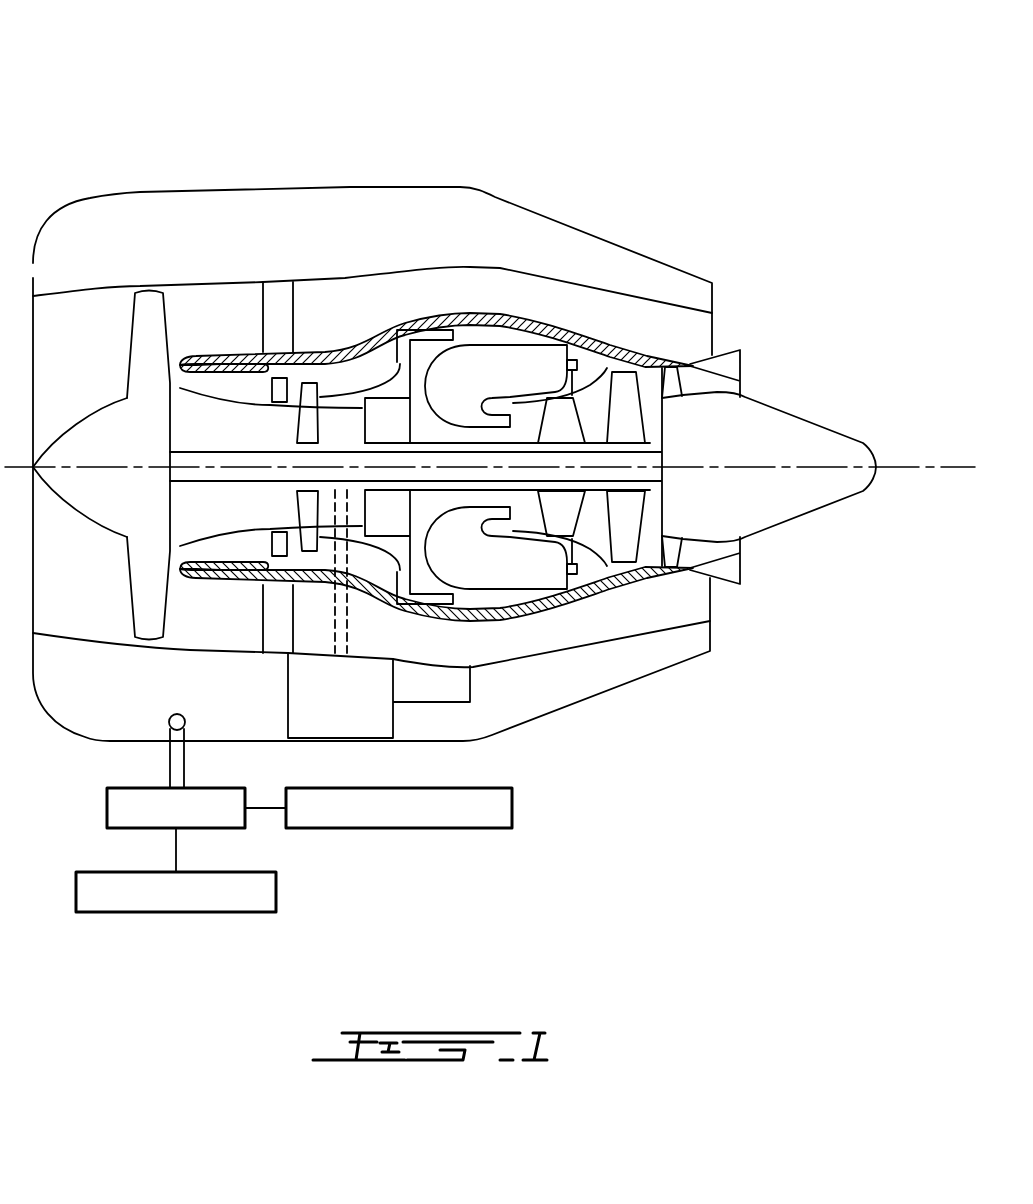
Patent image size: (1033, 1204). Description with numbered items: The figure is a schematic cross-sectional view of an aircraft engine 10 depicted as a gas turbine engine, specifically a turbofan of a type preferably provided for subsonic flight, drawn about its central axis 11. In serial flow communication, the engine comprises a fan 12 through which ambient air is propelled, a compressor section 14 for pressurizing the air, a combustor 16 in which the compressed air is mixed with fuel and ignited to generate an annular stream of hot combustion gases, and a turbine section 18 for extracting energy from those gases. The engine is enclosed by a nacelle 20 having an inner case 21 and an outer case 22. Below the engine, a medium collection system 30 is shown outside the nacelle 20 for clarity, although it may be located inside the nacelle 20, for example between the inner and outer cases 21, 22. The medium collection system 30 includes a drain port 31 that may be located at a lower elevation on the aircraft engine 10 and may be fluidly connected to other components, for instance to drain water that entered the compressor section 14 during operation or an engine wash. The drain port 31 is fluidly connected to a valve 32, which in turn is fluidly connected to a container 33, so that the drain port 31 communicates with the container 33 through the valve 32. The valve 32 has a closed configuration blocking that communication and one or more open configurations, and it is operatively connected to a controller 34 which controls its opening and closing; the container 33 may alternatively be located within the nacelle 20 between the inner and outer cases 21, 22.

The aircraft engine 10 is at (648, 165).
The central axis 11 is at (903, 460).
The fan 12 is at (145, 579).
The compressor section 14 is at (334, 398).
The combustor 16 is at (497, 360).
The turbine section 18 is at (595, 515).
The nacelle 20 is at (124, 135).
The inner case 21 is at (663, 302).
The outer case 22 is at (647, 254).
The medium collection system 30 is at (617, 870).
The drain port 31 is at (168, 719).
The valve 32 is at (107, 807).
The container 33 is at (176, 912).
The controller 34 is at (395, 830).